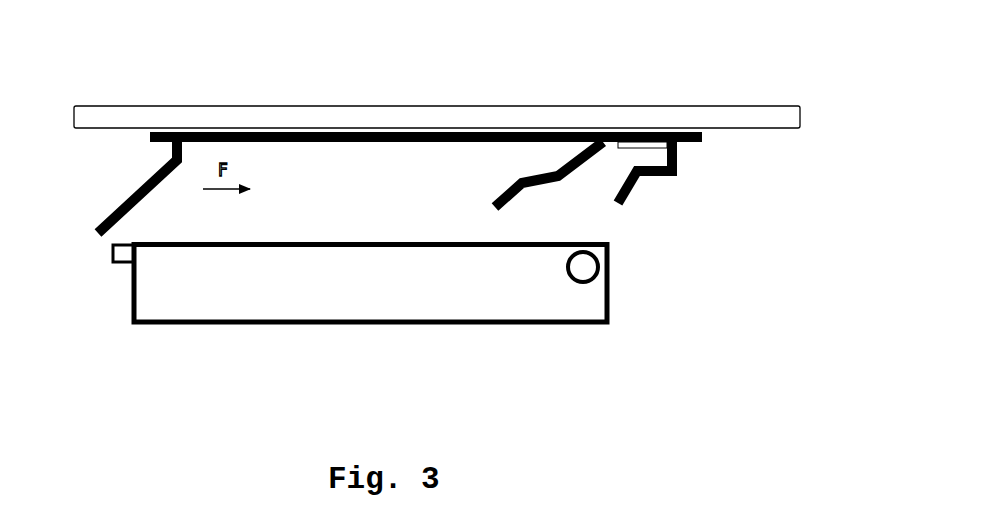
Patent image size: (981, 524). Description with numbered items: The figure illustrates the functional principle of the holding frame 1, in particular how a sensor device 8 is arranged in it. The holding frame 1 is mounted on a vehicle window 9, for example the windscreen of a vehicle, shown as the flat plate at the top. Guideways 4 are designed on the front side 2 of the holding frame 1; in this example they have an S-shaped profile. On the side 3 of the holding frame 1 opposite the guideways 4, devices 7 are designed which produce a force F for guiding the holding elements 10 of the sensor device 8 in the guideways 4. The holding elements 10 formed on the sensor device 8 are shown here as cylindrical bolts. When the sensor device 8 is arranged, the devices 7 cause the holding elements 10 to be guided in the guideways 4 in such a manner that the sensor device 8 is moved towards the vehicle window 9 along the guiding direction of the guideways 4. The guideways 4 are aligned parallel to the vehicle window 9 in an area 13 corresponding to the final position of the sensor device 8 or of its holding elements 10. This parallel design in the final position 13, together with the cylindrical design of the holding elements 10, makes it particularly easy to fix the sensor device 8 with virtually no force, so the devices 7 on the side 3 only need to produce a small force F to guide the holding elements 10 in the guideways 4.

The holding frame 1 is at (372, 152).
The front side 2 is at (722, 153).
The side opposite the guideways 3 is at (120, 155).
The guideways 4 is at (632, 157).
The devices 7 is at (158, 198).
The sensor device 8 is at (388, 310).
The vehicle window 9 is at (672, 122).
The holding elements 10 is at (585, 267).
The area corresponding to final position 13 is at (651, 148).